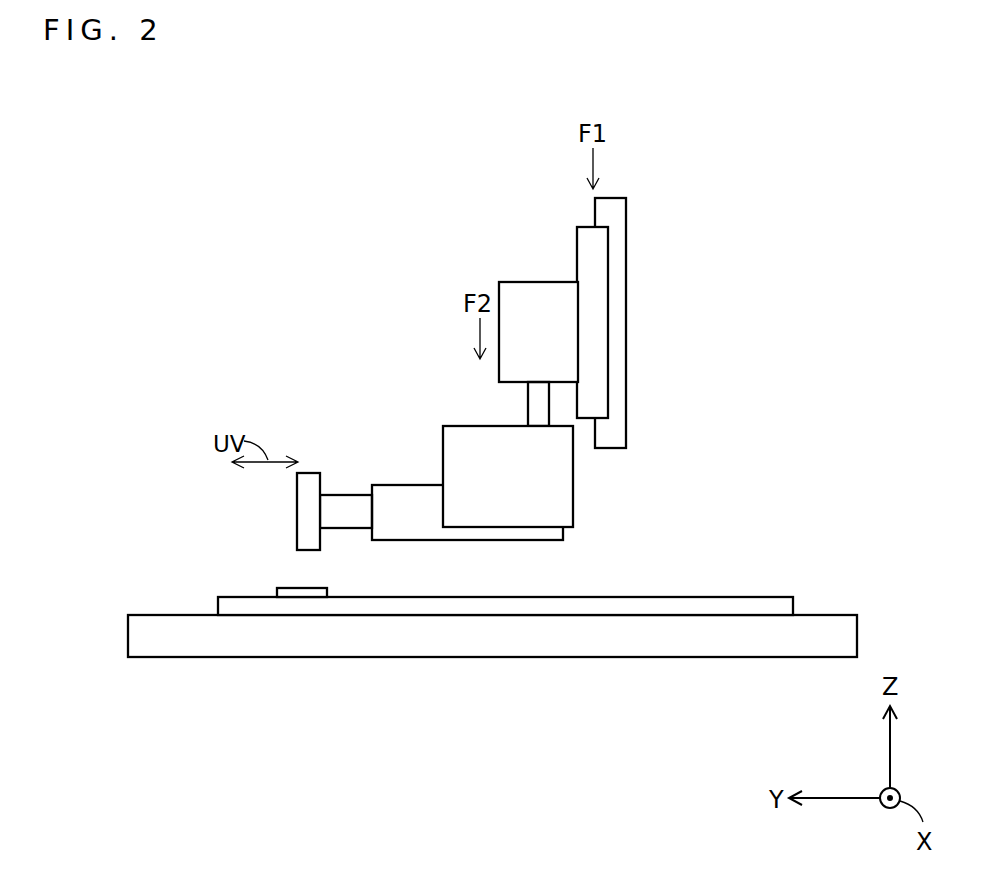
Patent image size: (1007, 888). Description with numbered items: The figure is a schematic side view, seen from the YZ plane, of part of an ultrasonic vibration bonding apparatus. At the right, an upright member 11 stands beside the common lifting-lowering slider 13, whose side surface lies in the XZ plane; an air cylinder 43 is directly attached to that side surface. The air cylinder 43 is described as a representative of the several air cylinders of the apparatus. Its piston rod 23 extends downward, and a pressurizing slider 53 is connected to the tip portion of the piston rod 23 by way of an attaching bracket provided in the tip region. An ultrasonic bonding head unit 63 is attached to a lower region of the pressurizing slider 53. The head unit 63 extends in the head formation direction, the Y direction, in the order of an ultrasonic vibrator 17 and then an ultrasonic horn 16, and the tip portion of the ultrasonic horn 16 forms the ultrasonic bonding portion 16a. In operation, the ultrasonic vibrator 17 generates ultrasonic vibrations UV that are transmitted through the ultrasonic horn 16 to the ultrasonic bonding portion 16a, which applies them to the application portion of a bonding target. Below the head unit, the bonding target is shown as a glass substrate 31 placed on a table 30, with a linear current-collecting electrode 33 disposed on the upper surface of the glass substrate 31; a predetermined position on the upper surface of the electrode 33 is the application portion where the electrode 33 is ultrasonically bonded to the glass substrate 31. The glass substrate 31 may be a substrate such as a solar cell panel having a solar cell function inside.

The support column 11 is at (625, 323).
The common lifting-lowering slider 13 is at (583, 226).
The air cylinder 43 is at (530, 277).
The piston rod 23 is at (527, 405).
The pressurizing slider 53 is at (575, 488).
The ultrasonic vibrator 17 is at (405, 485).
The ultrasonic horn 16 is at (345, 495).
The ultrasonic bonding portion 16a is at (308, 473).
The ultrasonic bonding head unit 63 is at (437, 415).
The electrode 33 is at (302, 588).
The glass substrate 31 is at (727, 597).
The table 30 is at (840, 615).